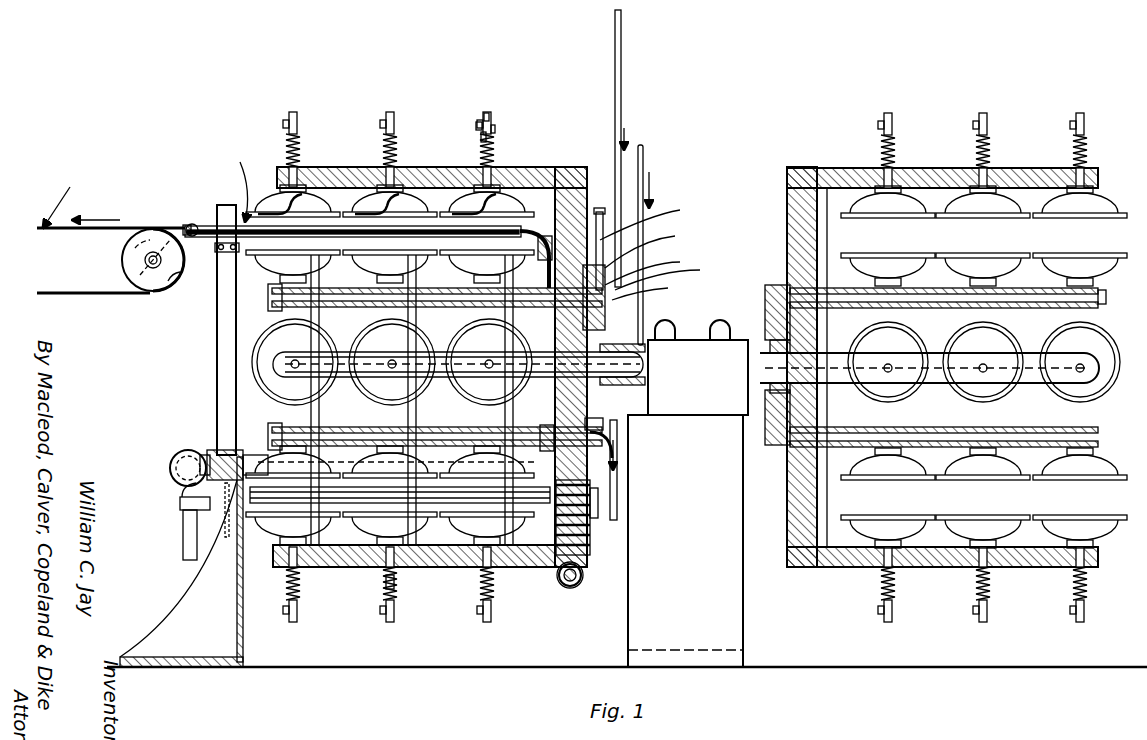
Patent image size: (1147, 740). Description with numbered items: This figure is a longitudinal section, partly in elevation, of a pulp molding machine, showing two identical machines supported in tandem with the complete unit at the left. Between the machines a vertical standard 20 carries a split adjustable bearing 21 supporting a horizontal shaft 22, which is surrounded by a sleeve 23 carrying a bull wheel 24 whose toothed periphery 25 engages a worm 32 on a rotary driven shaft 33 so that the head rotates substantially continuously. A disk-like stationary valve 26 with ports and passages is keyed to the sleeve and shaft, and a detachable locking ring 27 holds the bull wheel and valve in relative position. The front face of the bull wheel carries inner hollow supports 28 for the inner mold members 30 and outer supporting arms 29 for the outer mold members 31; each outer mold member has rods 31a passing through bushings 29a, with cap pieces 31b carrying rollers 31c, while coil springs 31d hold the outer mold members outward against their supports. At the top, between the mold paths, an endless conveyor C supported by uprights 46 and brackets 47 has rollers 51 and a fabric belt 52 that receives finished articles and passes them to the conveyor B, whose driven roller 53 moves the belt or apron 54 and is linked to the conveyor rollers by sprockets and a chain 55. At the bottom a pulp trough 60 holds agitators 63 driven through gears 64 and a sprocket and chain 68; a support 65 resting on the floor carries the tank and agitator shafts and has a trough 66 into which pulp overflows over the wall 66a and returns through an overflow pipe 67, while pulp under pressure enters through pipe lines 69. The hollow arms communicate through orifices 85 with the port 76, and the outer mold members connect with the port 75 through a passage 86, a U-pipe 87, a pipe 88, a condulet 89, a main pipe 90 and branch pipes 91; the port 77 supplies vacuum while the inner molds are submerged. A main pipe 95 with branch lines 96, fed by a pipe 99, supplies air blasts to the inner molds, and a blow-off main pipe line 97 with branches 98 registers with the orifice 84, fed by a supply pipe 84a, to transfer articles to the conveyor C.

The vertical standard 20 is at (735, 608).
The split adjustable bearing 21 is at (716, 328).
The horizontal shaft 22 is at (660, 328).
The sleeve 23 is at (607, 297).
The bull wheel 24 is at (567, 170).
The toothed periphery 25 is at (590, 552).
The stationary valve 26 is at (651, 284).
The detachable locking ring 27 is at (651, 242).
The inner hollow supports 28 is at (275, 305).
The outer supporting arms 29 is at (412, 175).
The bushings 29a is at (452, 175).
The inner mold members 30 is at (470, 262).
The outer mold members 31 is at (496, 180).
The rods 31a is at (492, 135).
The cap pieces 31b is at (494, 128).
The rollers 31c is at (490, 116).
The coil springs 31d is at (480, 128).
The worm 32 is at (562, 585).
The rotary driven shaft 33 is at (578, 586).
The uprights 46 is at (217, 341).
The brackets 47 is at (216, 252).
The rollers 51 is at (194, 226).
The endless belt 52 is at (270, 228).
The driven roller 53 is at (160, 238).
The belt or apron 54 is at (83, 292).
The sprockets and sprocket chain 55 is at (165, 293).
The pulp trough 60 is at (285, 520).
The agitators 63 is at (358, 565).
The gears 64 is at (180, 508).
The support 65 is at (220, 650).
The trough 66 is at (215, 452).
The wall 66a is at (250, 455).
The overflow pipe 67 is at (185, 465).
The sprocket and chain 68 is at (226, 537).
The pipe lines 69 is at (183, 548).
The inner port 75 is at (605, 428).
The outer port 76 is at (668, 270).
The port 77 is at (615, 445).
The orifice 84 is at (660, 245).
The supply pipe 84a is at (622, 73).
The orifices 85 is at (543, 258).
The passage 86 is at (459, 364).
The U-pipe 87 is at (540, 322).
The pipe 88 is at (620, 478).
The condulet 89 is at (643, 523).
The main pipe 90 is at (515, 195).
The branch pipes 91 is at (300, 195).
The main pipe 95 is at (434, 400).
The branch lines 96 is at (400, 316).
The main pipe line 97 is at (599, 210).
The branches 98 is at (340, 200).
The pipe 99 is at (652, 265).
The endless conveyor B is at (81, 194).
The endless conveyor C is at (238, 181).